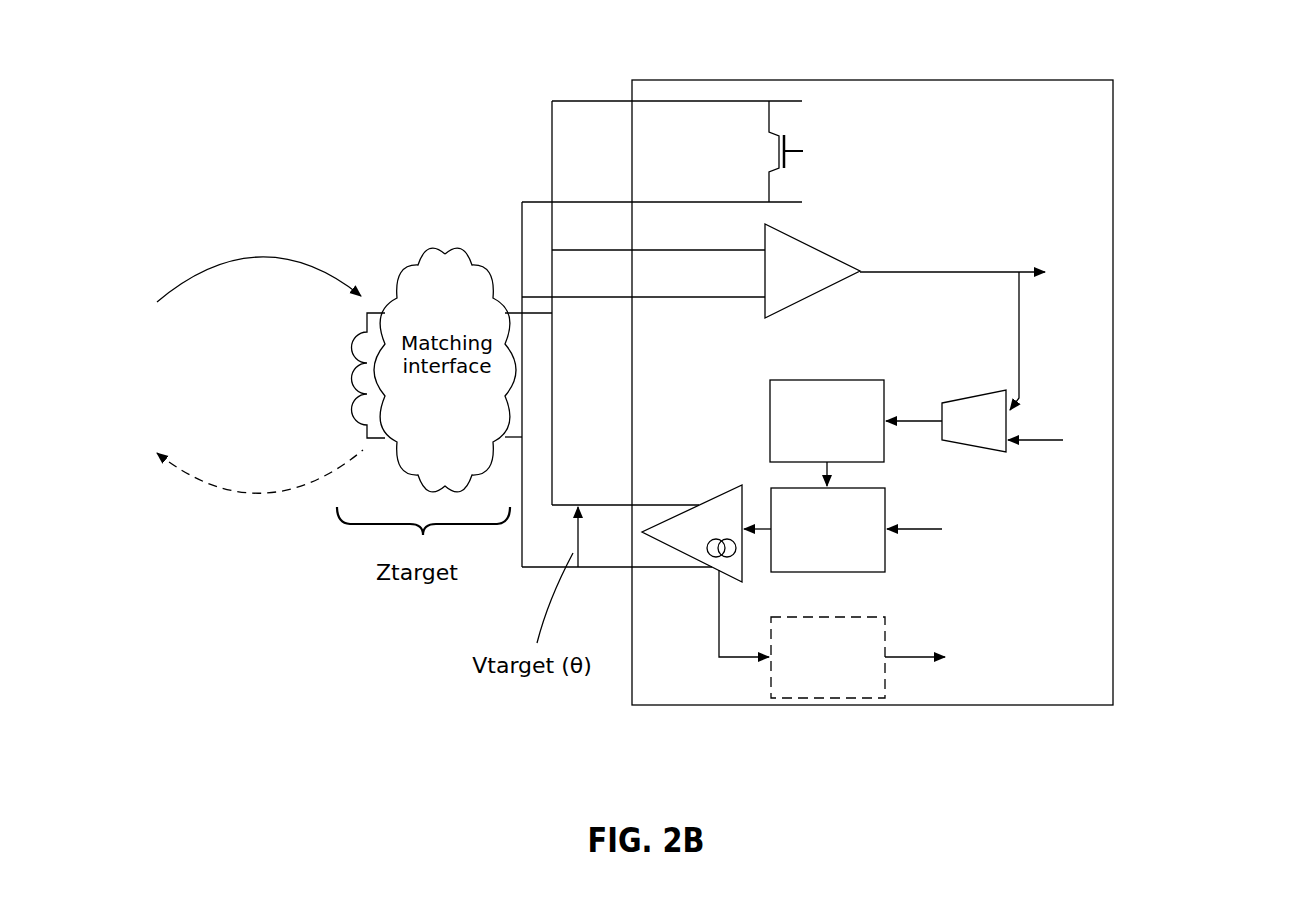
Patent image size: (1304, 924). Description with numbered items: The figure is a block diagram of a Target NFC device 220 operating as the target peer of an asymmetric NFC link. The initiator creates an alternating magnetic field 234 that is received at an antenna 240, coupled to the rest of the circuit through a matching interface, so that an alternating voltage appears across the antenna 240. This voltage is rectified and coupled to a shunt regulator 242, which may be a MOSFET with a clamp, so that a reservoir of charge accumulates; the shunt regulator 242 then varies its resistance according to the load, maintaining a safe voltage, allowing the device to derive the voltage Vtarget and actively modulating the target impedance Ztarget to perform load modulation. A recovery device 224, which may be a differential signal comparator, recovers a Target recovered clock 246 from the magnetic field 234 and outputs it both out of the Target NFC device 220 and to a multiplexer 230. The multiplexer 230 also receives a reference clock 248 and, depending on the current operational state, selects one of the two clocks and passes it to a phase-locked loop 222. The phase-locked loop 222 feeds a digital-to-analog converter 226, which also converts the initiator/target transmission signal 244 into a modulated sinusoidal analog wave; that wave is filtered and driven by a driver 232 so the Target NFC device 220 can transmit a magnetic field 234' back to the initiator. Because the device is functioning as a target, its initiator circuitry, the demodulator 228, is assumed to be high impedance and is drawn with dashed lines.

The Target NFC device 220 is at (1200, 69).
The phase-locked loop (PLL) 222 is at (856, 421).
The recovery device 224 is at (812, 271).
The digital-to-analog converter (DAC) 226 is at (814, 517).
The demodulator 228 is at (858, 657).
The multiplexer (MUX) 230 is at (970, 394).
The driver 232 is at (705, 571).
The magnetic field 234 is at (259, 265).
The magnetic field 234' is at (260, 489).
The antenna 240 is at (326, 367).
The shunt regulator 242 is at (814, 153).
The initiator/target transmission signal 244 is at (937, 529).
The Target recovered clock 246 is at (976, 272).
The reference clock 248 is at (1058, 440).